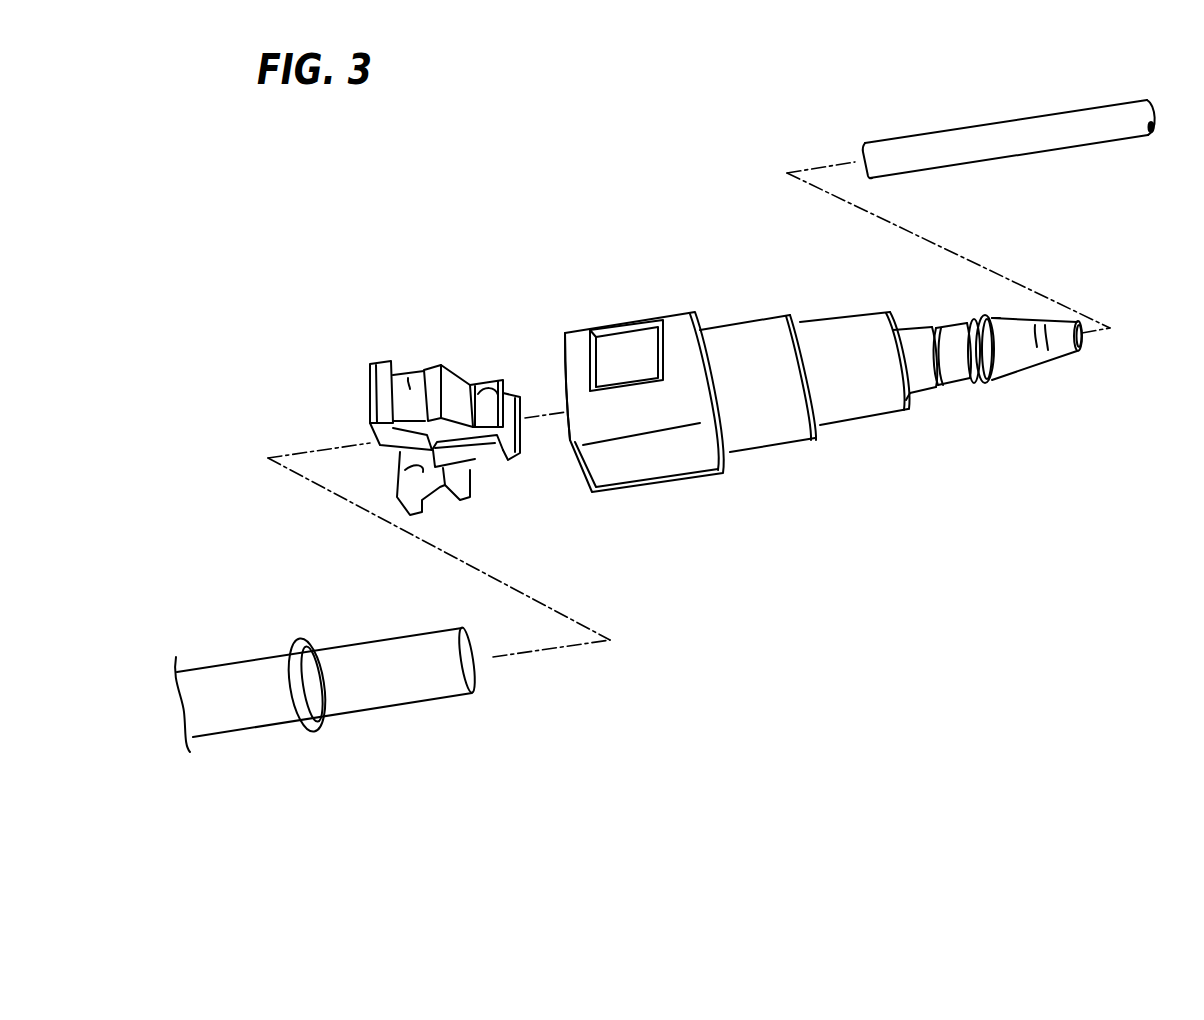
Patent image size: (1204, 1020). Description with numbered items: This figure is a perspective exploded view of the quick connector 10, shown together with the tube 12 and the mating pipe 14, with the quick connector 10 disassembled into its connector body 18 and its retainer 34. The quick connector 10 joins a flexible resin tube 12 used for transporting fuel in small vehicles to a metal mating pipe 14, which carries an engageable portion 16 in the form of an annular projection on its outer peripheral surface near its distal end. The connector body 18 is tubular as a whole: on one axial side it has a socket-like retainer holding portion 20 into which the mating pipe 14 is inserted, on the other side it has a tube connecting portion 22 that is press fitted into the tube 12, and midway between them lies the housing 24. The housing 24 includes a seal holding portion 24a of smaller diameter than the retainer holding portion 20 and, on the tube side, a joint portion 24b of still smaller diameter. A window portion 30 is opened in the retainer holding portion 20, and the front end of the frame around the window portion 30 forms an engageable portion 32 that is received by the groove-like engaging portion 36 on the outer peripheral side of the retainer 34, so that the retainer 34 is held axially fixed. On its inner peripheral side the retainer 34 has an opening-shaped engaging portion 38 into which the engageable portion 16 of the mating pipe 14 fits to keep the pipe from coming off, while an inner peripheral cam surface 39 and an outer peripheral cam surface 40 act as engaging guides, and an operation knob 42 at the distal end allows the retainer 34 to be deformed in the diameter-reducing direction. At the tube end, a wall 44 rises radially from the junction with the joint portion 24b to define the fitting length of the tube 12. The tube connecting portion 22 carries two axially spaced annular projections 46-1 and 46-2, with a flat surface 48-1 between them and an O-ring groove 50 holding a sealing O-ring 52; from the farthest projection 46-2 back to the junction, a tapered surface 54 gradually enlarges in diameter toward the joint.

The quick connector 10 is at (525, 243).
The tube 12 is at (1115, 148).
The mating pipe 14 is at (245, 655).
The engageable portion 16 is at (312, 725).
The connector body 18 is at (823, 342).
The retainer holding portion 20 is at (644, 348).
The tube connecting portion 22 is at (1033, 370).
The housing 24 is at (804, 335).
The seal holding portion 24a is at (768, 325).
The joint portion 24b is at (854, 345).
The window portion 30 is at (650, 350).
The engageable portion 32 is at (575, 345).
The retainer 34 is at (425, 370).
The groove-like engaging portion 36 is at (417, 370).
The opening-shaped engaging portion 38 is at (490, 375).
The inner peripheral cam surface 39 is at (423, 468).
The outer peripheral cam surface 40 is at (460, 370).
The operation knob 42 is at (378, 362).
The wall 44 is at (912, 410).
The annular projection 46-1 is at (1000, 325).
The annular projection 46-2 is at (938, 347).
The flat surface 48-1 is at (965, 360).
The O-ring groove 50 is at (1000, 375).
The O-ring 52 is at (983, 318).
The tapered surface 54 is at (913, 345).